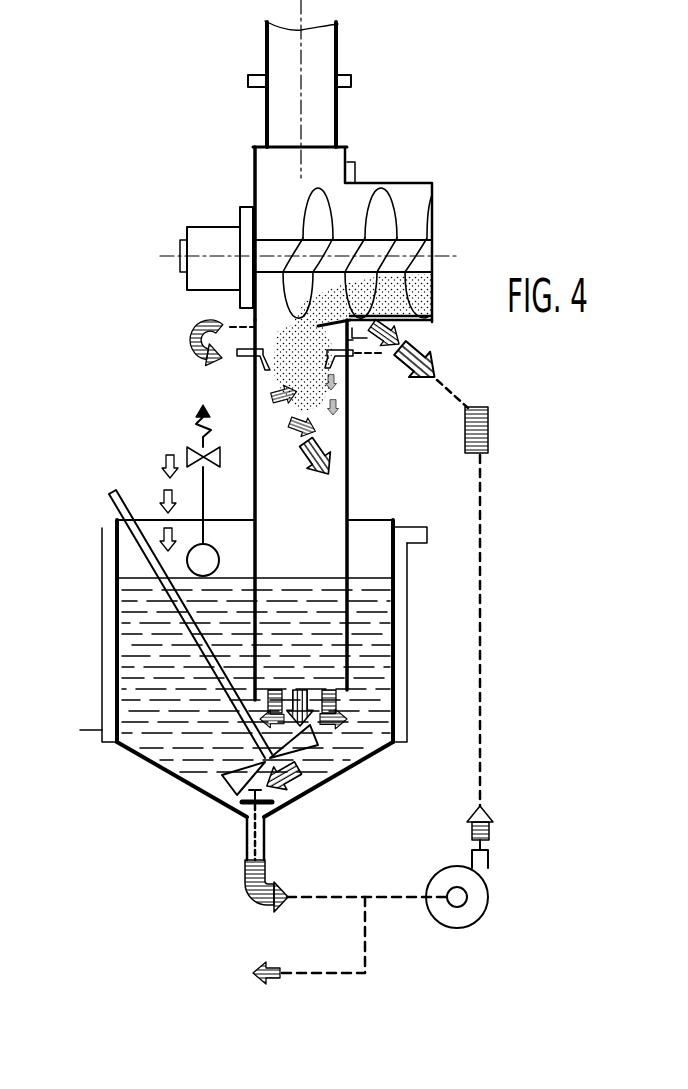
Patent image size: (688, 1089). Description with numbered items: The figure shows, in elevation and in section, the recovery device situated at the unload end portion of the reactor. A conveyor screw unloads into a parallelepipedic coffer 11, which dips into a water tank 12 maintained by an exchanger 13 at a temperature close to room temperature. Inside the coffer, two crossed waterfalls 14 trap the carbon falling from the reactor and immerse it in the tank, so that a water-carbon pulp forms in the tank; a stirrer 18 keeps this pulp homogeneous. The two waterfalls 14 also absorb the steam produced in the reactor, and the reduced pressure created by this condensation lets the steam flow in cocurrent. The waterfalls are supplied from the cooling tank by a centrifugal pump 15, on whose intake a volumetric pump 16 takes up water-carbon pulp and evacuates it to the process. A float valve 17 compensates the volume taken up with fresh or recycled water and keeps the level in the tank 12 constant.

The coffer 11 is at (270, 183).
The water tank 12 is at (187, 765).
The exchanger 13 is at (108, 643).
The crossed waterfalls 14 is at (327, 410).
The centrifugal pump 15 is at (468, 917).
The volumetric pump 16 is at (365, 950).
The float valve 17 is at (187, 560).
The stirrer 18 is at (115, 505).